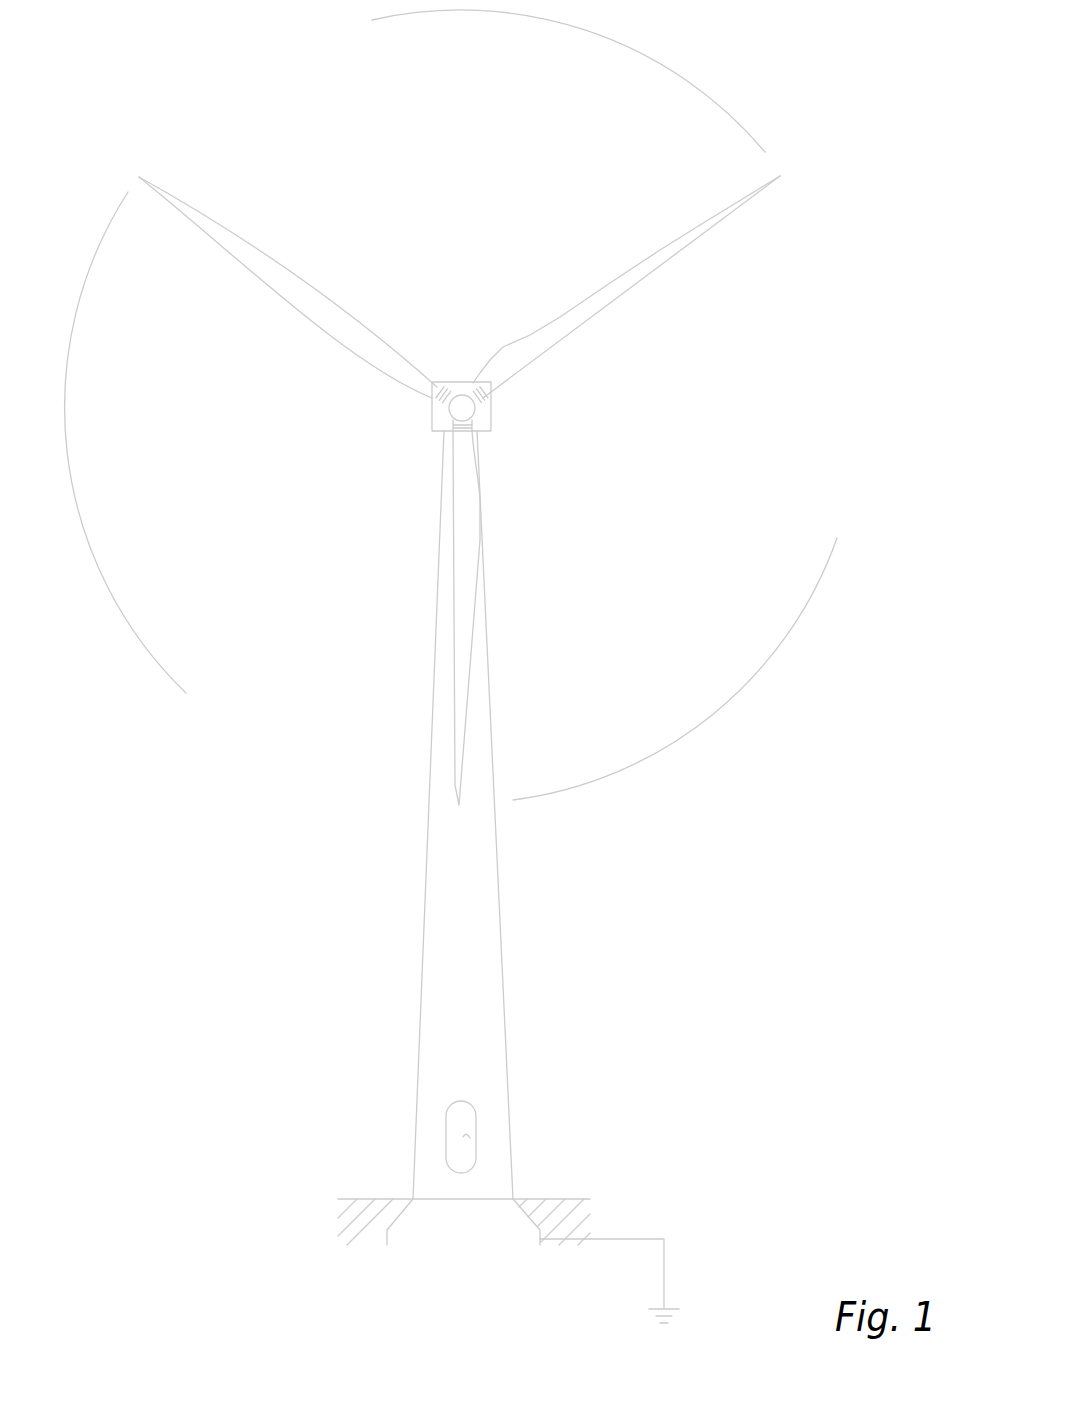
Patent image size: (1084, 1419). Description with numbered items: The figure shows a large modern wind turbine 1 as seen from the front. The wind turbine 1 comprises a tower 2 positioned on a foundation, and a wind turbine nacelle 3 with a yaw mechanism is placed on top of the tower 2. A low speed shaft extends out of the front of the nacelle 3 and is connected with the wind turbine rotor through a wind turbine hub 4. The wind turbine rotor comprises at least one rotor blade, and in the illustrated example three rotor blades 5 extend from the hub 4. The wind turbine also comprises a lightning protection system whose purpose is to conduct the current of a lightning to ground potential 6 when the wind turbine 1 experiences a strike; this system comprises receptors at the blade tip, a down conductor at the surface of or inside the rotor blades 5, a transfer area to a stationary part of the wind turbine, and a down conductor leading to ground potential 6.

The wind turbine 1 is at (451, 666).
The tower 2 is at (498, 892).
The wind turbine nacelle 3 is at (491, 431).
The wind turbine hub 4 is at (461, 397).
The rotor blades 5 is at (463, 657).
The ground potential 6 is at (658, 1237).